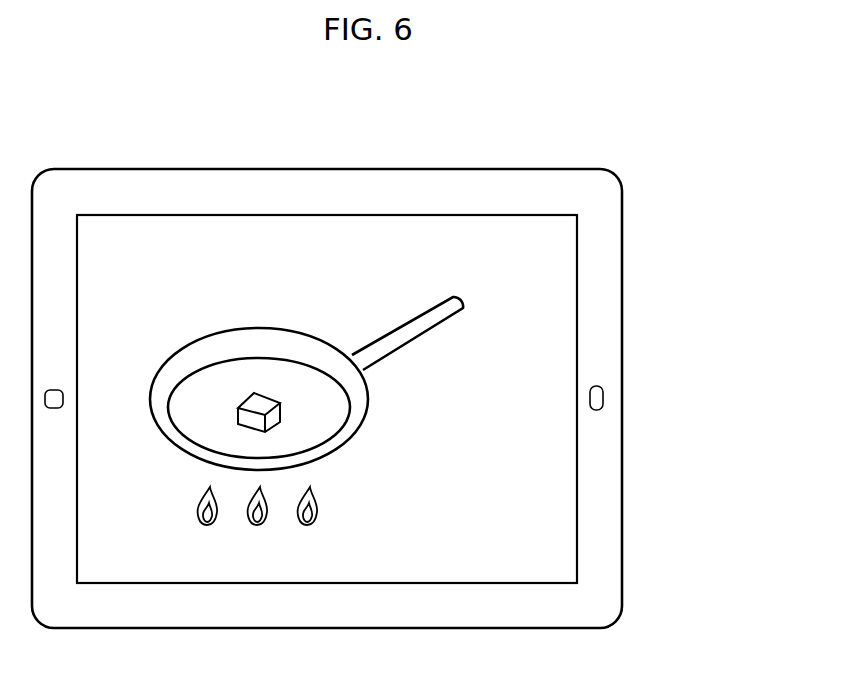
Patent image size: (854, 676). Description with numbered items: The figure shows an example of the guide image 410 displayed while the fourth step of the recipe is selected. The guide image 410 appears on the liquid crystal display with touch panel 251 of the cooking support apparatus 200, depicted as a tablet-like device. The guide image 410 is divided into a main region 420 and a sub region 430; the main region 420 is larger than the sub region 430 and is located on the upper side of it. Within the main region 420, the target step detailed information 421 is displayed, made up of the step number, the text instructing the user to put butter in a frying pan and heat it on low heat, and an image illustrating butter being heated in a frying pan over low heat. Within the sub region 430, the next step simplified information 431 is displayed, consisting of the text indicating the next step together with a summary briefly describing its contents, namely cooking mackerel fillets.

The cooking support apparatus 200 is at (360, 169).
The liquid crystal display with touch panel 251 is at (548, 215).
The guide image 410 is at (498, 233).
The main region 420 is at (672, 533).
The target step detailed information 421 is at (470, 309).
The sub region 430 is at (672, 538).
The next step simplified information 431 is at (470, 562).